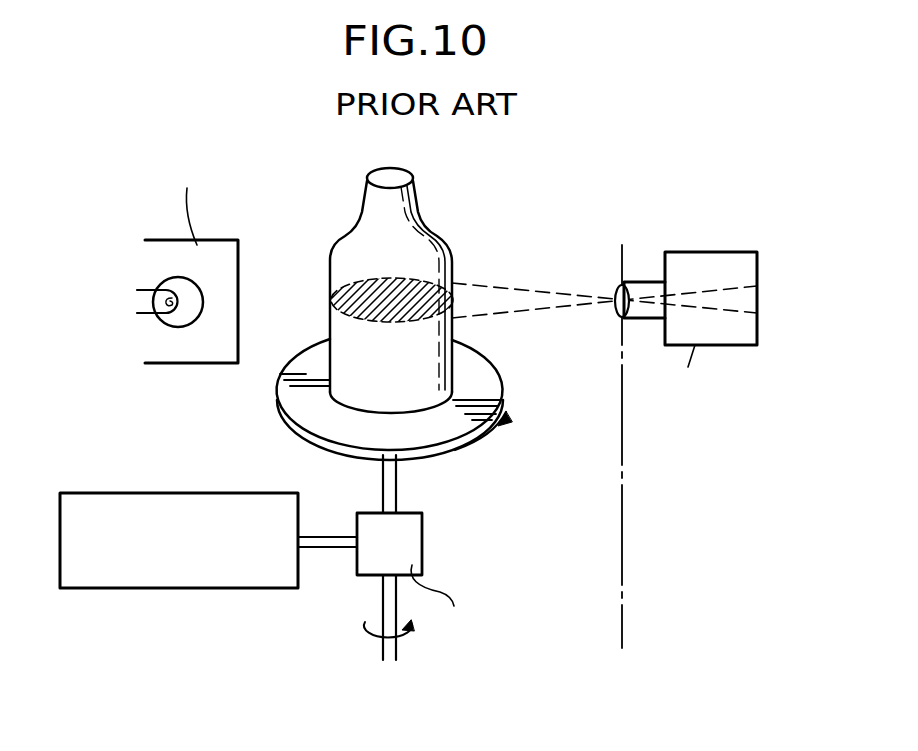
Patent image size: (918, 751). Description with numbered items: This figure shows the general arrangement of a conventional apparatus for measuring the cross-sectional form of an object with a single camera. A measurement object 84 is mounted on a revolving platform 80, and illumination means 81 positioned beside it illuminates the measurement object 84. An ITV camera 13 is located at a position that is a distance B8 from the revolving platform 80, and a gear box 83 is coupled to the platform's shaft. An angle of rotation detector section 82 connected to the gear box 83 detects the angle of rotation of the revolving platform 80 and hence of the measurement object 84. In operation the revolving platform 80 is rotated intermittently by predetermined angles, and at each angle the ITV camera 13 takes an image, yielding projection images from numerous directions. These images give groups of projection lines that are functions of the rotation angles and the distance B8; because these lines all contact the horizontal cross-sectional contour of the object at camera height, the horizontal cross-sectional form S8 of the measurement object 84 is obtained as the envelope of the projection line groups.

The illumination means 81 is at (220, 240).
The measurement object 84 is at (417, 212).
The horizontal cross-sectional form S8 is at (340, 299).
The ITV camera 13 is at (703, 252).
The revolving platform 80 is at (278, 393).
The gear box 83 is at (422, 558).
The angle of rotation detector section 82 is at (232, 588).
The distance B8 is at (620, 485).